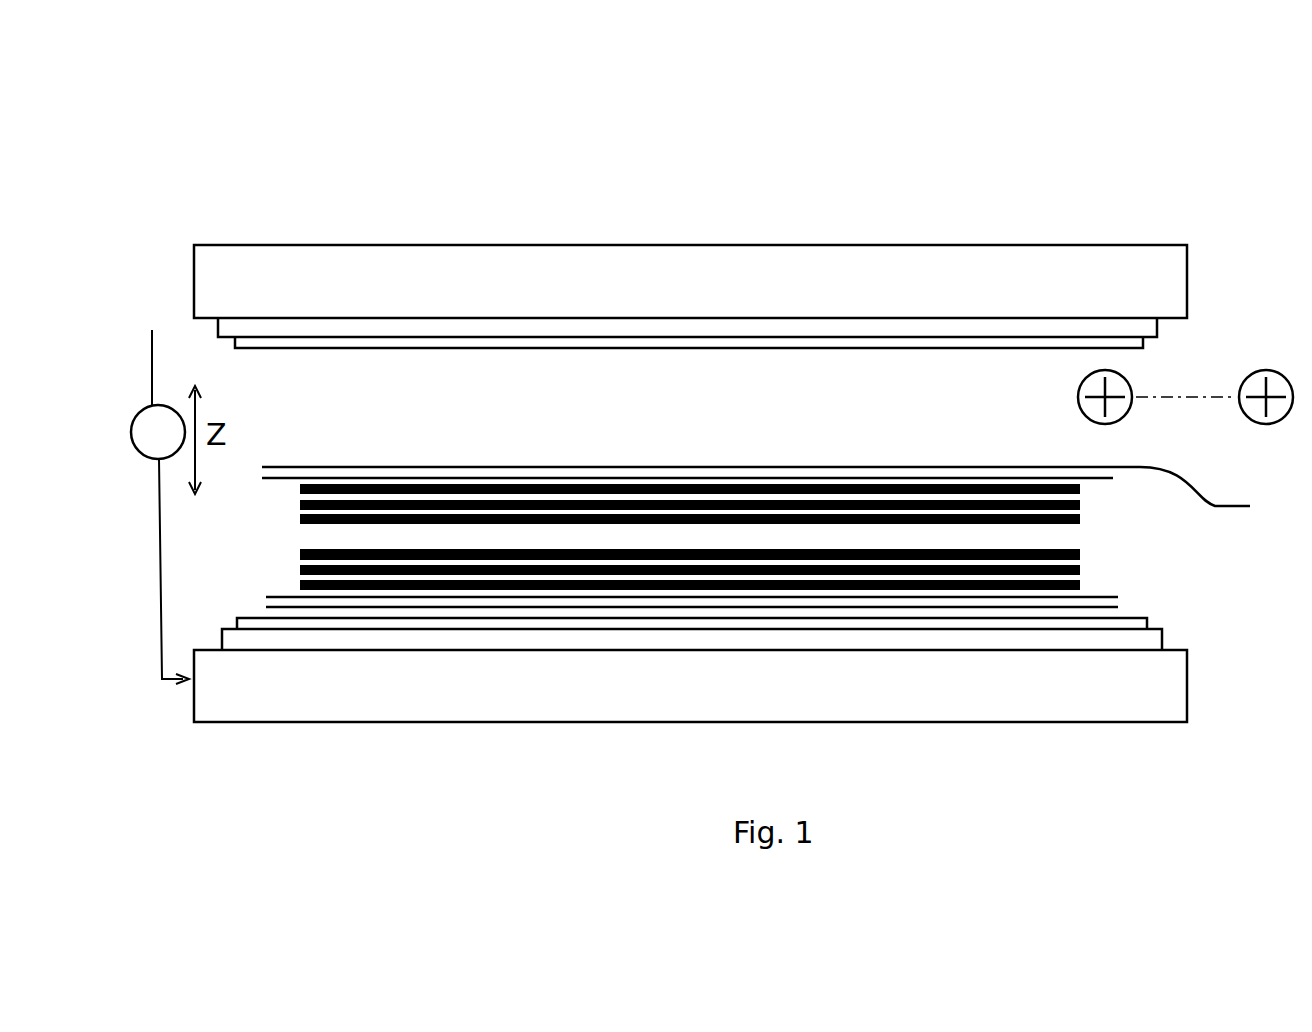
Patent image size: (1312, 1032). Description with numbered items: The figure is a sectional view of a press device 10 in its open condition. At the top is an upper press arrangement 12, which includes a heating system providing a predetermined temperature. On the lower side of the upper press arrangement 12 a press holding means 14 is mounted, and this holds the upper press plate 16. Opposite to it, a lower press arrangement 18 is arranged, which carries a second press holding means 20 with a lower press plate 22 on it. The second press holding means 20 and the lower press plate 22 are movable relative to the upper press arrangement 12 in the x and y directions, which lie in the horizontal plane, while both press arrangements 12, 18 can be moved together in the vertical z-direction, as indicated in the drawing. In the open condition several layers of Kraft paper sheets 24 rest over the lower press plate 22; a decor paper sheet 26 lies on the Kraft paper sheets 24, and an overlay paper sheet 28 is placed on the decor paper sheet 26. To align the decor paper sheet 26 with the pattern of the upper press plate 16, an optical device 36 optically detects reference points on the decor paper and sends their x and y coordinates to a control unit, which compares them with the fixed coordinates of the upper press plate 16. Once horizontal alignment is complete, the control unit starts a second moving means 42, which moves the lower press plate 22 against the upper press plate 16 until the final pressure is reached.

The press device 10 is at (1103, 539).
The upper press arrangement 12 is at (245, 265).
The press holding means 14 is at (357, 332).
The upper press plate 16 is at (487, 345).
The lower press arrangement 18 is at (265, 687).
The second press holding means 20 is at (362, 642).
The lower press plate 22 is at (520, 623).
The Kraft paper sheets 24 is at (1080, 557).
The decor paper sheet 26 is at (1113, 478).
The overlay paper sheet 28 is at (775, 494).
The optical device 36 is at (1262, 372).
The second moving means 42 is at (152, 330).